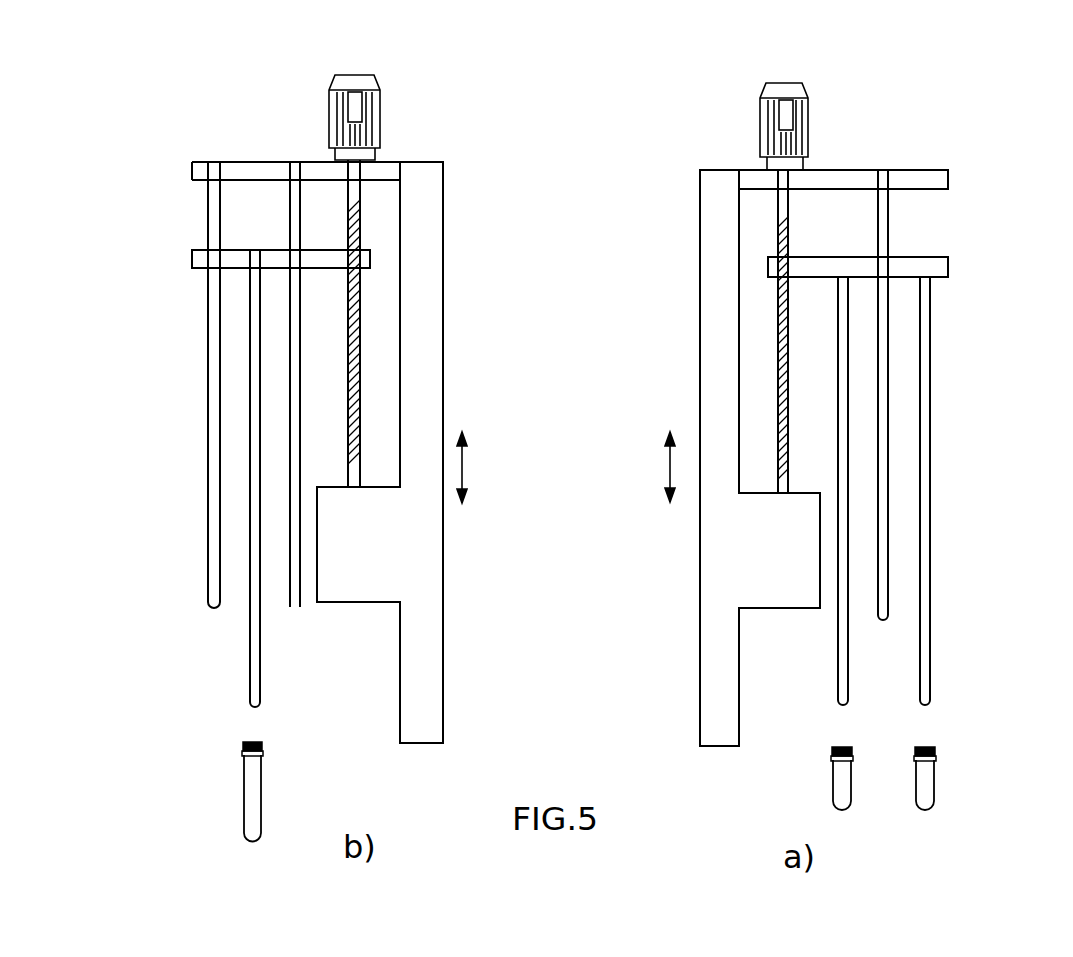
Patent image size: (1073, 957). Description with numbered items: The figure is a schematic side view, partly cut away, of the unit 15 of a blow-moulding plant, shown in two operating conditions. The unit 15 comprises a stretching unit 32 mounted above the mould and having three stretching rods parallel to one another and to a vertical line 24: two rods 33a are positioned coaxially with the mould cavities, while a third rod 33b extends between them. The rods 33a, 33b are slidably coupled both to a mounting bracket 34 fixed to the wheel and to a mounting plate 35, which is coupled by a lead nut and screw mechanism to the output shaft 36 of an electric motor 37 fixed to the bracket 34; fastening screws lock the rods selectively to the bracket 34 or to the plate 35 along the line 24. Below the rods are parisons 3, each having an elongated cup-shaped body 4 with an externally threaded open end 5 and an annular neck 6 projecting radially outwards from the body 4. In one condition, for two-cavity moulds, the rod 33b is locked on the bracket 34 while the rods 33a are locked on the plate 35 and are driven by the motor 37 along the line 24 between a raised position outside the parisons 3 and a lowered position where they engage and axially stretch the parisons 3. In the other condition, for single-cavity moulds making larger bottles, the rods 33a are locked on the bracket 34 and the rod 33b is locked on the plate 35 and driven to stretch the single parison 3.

The unit 15 is at (88, 144).
The stretching unit 32 is at (200, 148).
The mounting bracket 34 is at (255, 170).
The mounting plate 35 is at (238, 262).
The stretching rods 33a is at (296, 410).
The stretching rod 33b is at (250, 650).
The output shaft 36 is at (354, 376).
The electric motor 37 is at (380, 125).
The vertical line 24 is at (566, 467).
The parison 3 is at (222, 784).
The body 4 is at (246, 820).
The open end 5 is at (258, 742).
The annular neck 6 is at (264, 753).